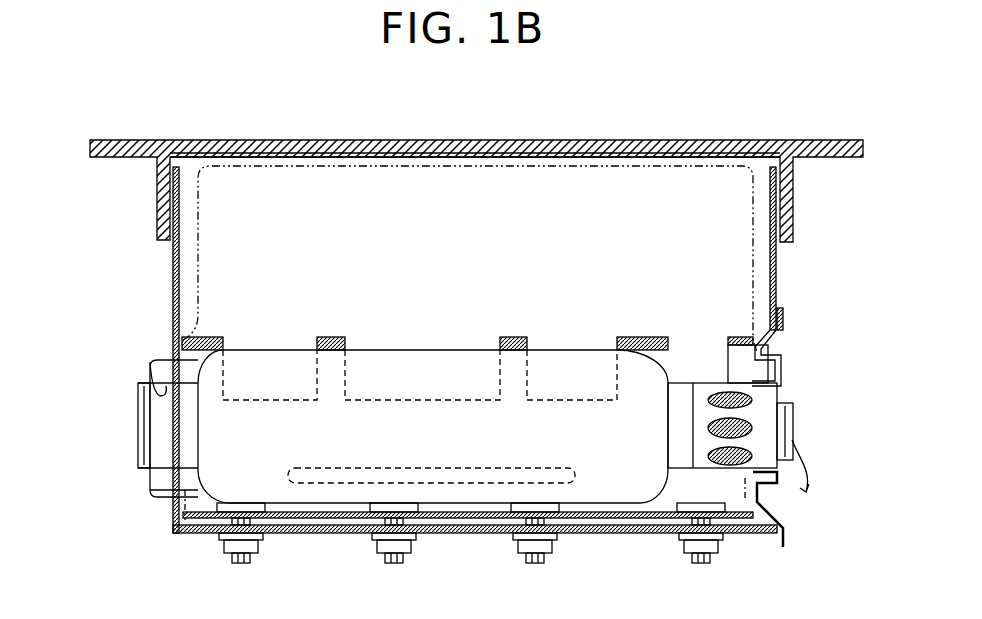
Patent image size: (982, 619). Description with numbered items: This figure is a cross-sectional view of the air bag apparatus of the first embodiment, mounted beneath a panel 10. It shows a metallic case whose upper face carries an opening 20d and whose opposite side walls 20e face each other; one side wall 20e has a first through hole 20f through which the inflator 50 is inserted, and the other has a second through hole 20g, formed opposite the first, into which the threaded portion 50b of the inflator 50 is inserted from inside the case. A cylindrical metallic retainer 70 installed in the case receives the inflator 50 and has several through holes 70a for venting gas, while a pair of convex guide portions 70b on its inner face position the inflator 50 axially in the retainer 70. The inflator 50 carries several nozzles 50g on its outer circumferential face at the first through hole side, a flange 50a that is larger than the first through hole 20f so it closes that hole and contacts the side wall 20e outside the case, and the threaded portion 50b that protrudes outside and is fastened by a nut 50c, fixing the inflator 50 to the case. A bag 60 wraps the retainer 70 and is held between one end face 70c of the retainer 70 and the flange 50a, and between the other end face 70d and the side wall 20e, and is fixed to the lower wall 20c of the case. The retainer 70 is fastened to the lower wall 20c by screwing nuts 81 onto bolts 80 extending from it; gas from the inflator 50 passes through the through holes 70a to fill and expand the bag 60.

The vehicle body panel 10 is at (566, 148).
The lower wall of the case 20c is at (481, 533).
The opening 20d is at (192, 183).
The side wall 20e is at (778, 272).
The first through hole 20f is at (778, 346).
The second through hole 20g is at (150, 368).
The inflator 50 is at (200, 367).
The flange 50a is at (786, 521).
The threaded portion 50b is at (140, 432).
The nut 50c is at (156, 494).
The nozzle 50g is at (745, 415).
The bag 60 is at (200, 265).
The retainer 70 is at (748, 338).
The through hole 70a is at (692, 352).
The guide portion 70b is at (330, 483).
The end face of the retainer 70c is at (757, 345).
The other end face of the retainer 70d is at (184, 336).
The bolt 80 is at (690, 556).
The nut 81 is at (721, 550).